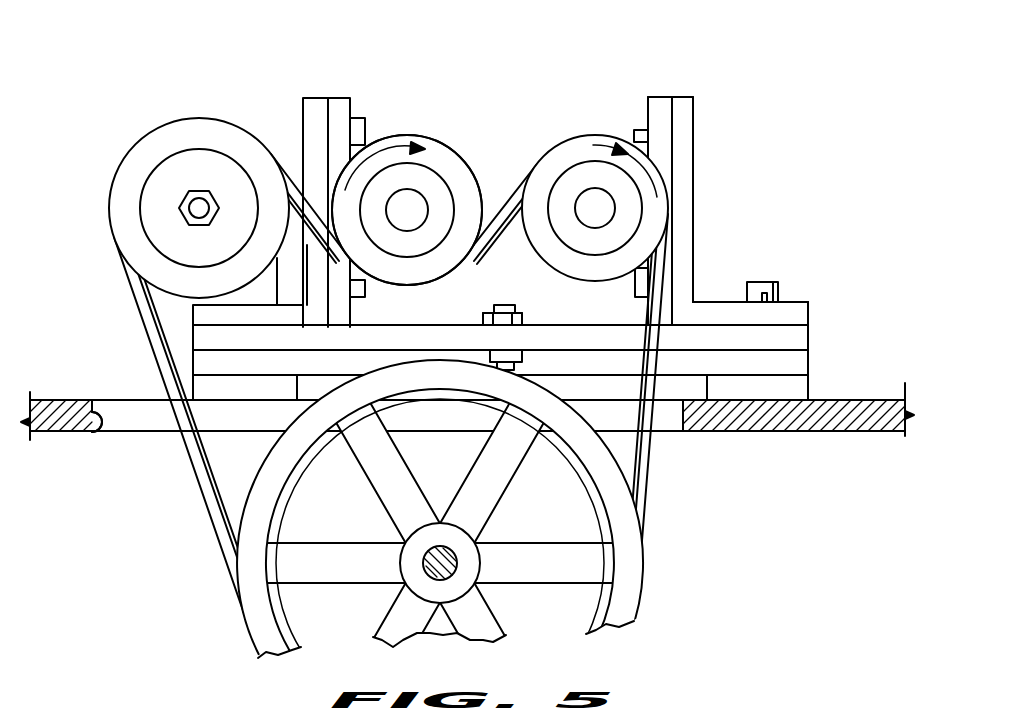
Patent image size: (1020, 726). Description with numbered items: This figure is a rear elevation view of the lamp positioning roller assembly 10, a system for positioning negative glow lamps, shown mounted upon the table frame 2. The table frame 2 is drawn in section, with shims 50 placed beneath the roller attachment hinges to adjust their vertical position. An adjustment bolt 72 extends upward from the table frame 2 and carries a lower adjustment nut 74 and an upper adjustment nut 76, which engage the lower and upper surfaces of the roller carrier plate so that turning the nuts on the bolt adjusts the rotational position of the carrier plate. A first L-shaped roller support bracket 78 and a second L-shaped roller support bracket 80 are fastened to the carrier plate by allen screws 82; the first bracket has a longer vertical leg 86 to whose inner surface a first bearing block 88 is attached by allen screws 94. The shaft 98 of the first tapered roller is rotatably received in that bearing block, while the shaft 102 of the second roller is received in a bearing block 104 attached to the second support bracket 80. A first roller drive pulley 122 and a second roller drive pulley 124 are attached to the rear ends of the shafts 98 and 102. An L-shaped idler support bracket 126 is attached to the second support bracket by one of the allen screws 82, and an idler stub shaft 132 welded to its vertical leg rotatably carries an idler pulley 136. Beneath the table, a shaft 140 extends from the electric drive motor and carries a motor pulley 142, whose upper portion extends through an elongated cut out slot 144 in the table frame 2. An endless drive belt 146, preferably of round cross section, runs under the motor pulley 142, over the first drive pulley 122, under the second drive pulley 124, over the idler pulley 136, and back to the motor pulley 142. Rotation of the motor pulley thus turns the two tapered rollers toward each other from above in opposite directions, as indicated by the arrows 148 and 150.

The table frame 2 is at (843, 397).
The lamp positioning roller assembly 10 is at (504, 82).
The shims 50 is at (790, 383).
The adjustment bolt 72 is at (508, 305).
The lower adjustment nut 74 is at (523, 362).
The upper adjustment nut 76 is at (521, 318).
The first L-shaped roller support bracket 78 is at (792, 302).
The second L-shaped roller support bracket 80 is at (317, 90).
The allen screws 82 is at (758, 282).
The longer vertical leg 86 is at (684, 143).
The first bearing block 88 is at (662, 102).
The allen screws 94 is at (633, 129).
The shaft 98 is at (588, 197).
The shaft 102 is at (409, 200).
The bearing block 104 is at (340, 98).
The first roller drive pulley 122 is at (562, 147).
The second roller drive pulley 124 is at (449, 156).
The L-shaped idler support bracket 126 is at (250, 296).
The idler stub shaft 132 is at (181, 209).
The idler pulley 136 is at (158, 126).
The shaft 140 is at (430, 570).
The motor pulley 142 is at (620, 593).
The elongated cut out slot 144 is at (106, 433).
The endless drive belt 146 is at (502, 197).
The arrow 148 is at (620, 148).
The arrow 150 is at (379, 149).